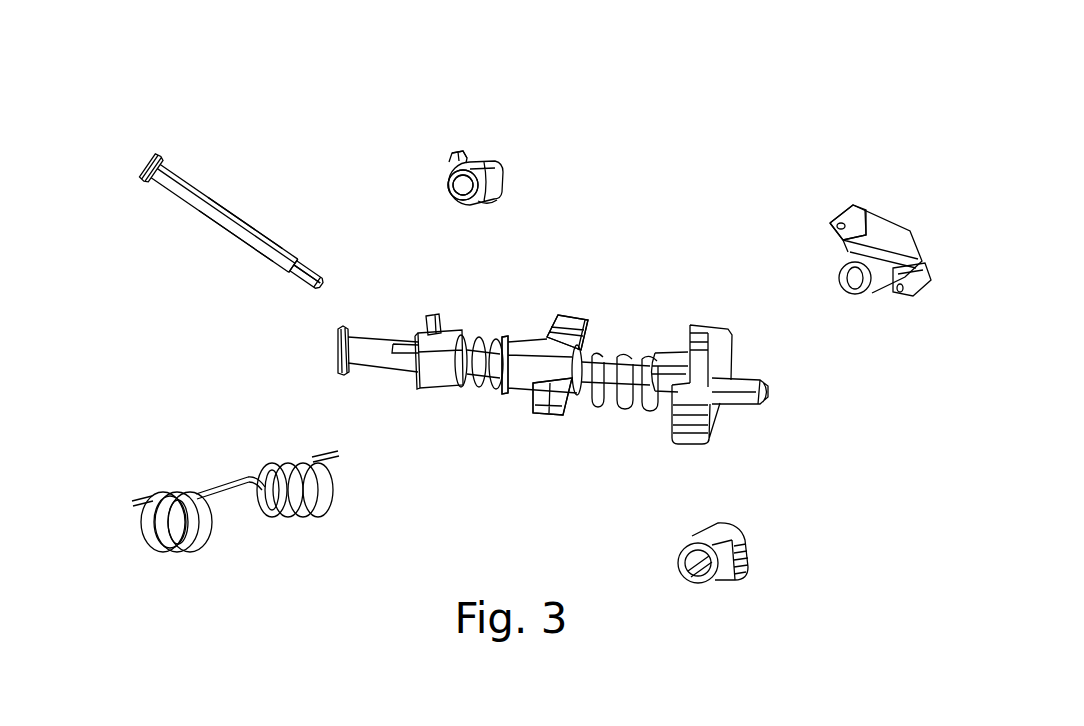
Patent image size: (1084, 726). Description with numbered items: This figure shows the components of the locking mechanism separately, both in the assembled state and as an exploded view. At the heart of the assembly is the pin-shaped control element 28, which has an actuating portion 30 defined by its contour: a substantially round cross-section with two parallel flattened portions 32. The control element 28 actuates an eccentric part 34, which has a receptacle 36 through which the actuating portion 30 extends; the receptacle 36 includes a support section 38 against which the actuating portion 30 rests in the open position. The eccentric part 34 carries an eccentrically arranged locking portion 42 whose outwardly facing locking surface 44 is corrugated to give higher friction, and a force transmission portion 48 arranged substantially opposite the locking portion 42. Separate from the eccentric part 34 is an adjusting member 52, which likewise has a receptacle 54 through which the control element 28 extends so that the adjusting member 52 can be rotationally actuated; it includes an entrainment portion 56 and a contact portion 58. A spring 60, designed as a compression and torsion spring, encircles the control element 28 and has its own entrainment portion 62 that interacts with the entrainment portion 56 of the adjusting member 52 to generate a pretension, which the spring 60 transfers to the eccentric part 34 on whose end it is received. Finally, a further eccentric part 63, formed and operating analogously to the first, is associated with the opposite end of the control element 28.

The control element 28 is at (182, 155).
The actuating portion 30 is at (237, 206).
The flattened portions 32 is at (281, 241).
The eccentric part 34 is at (482, 161).
The receptacle 36 is at (458, 205).
The support section 38 is at (446, 186).
The locking portion 42 is at (459, 156).
The locking surface 44 is at (447, 157).
The force transmission portion 48 is at (500, 197).
The adjusting member 52 is at (838, 196).
The receptacle 54 is at (851, 292).
The entrainment portion 56 is at (863, 218).
The contact portion 58 is at (548, 414).
The spring 60 is at (395, 471).
The entrainment portion 62 is at (222, 497).
The further eccentric part 63 is at (656, 410).